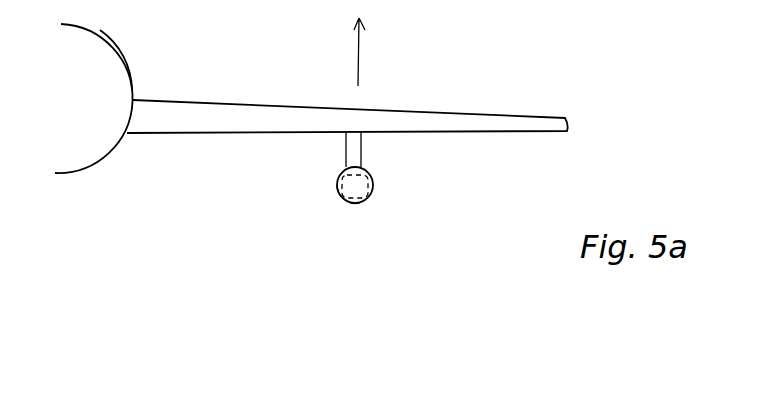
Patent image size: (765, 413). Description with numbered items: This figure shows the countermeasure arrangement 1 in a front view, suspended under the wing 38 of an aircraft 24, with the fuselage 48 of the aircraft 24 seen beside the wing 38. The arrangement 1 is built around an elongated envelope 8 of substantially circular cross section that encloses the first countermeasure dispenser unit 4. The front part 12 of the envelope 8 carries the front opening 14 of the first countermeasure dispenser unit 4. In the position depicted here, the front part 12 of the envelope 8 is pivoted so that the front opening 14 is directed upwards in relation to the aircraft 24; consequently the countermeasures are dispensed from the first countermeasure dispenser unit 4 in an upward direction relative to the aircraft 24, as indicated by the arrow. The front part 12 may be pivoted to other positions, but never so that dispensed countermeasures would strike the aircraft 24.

The countermeasure arrangement 1 is at (340, 172).
The first countermeasure dispenser unit 4 is at (370, 180).
The envelope 8 is at (353, 203).
The front part 12 is at (335, 188).
The front opening 14 is at (365, 163).
The aircraft 24 is at (117, 145).
The wing 38 is at (530, 112).
The fuselage 48 is at (117, 48).